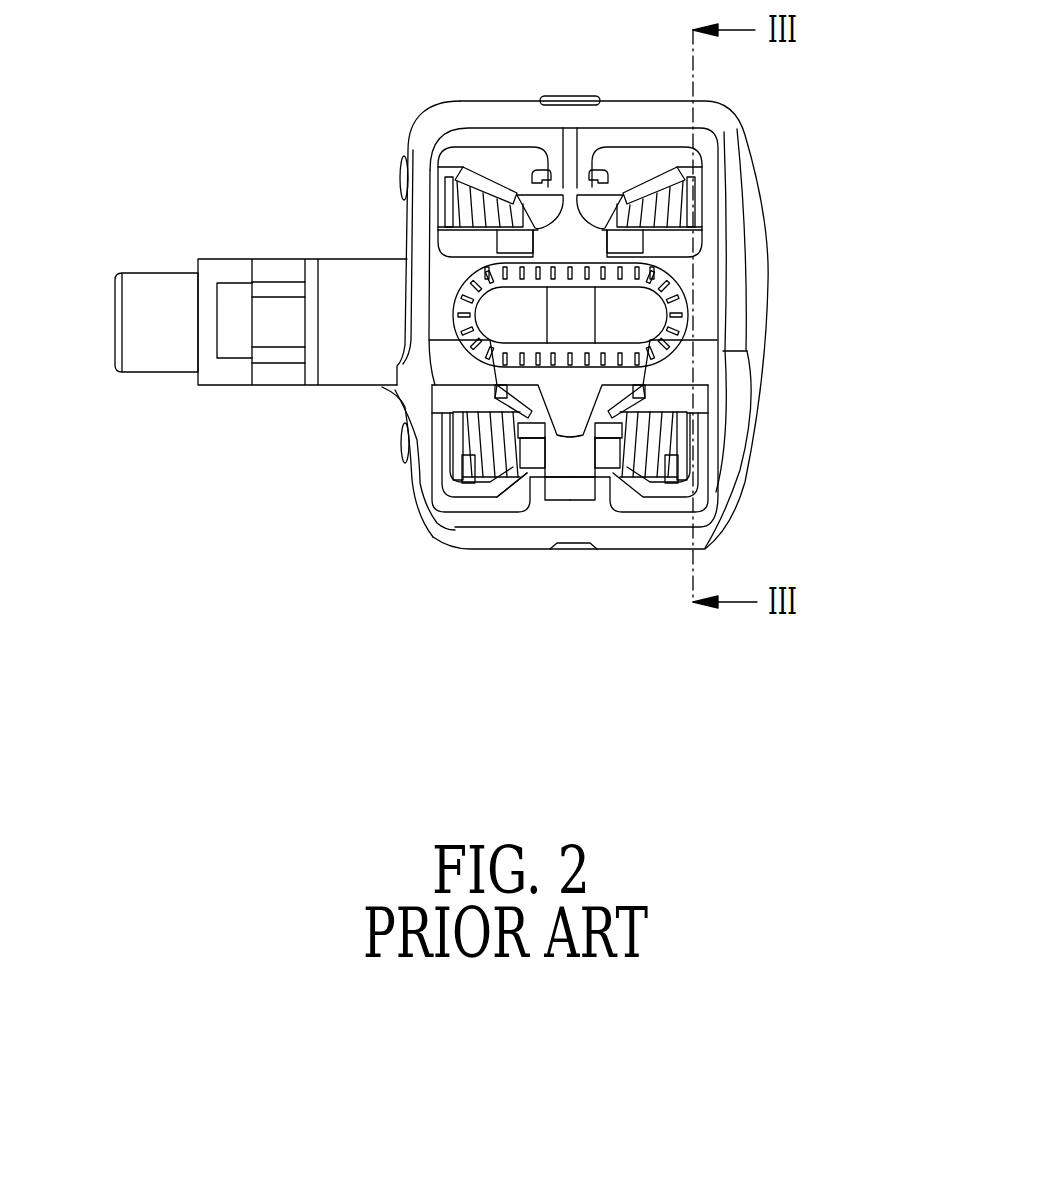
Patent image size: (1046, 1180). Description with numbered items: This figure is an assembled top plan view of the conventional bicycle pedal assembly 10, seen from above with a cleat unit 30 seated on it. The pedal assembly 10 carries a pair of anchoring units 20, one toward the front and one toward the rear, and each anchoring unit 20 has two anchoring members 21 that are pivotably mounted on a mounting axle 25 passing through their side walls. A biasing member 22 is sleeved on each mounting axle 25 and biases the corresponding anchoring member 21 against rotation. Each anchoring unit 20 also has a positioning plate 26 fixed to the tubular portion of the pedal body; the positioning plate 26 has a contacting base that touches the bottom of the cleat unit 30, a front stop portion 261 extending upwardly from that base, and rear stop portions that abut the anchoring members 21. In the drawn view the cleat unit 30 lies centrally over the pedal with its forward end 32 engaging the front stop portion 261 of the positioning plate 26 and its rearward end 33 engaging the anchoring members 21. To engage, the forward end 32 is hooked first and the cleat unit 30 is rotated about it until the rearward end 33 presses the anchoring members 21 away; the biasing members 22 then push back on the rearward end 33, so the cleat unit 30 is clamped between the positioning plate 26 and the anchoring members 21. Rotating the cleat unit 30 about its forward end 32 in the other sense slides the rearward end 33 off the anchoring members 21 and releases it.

The bicycle pedal assembly 10 is at (412, 103).
The anchoring unit 20 is at (528, 125).
The anchoring member 21 is at (481, 136).
The biasing member 22 is at (447, 143).
The mounting axle 25 is at (467, 190).
The positioning plate 26 is at (668, 287).
The cleat unit 30 is at (435, 302).
The forward end 32 is at (567, 433).
The rearward end 33 is at (560, 195).
The front stop portion 261 is at (555, 470).